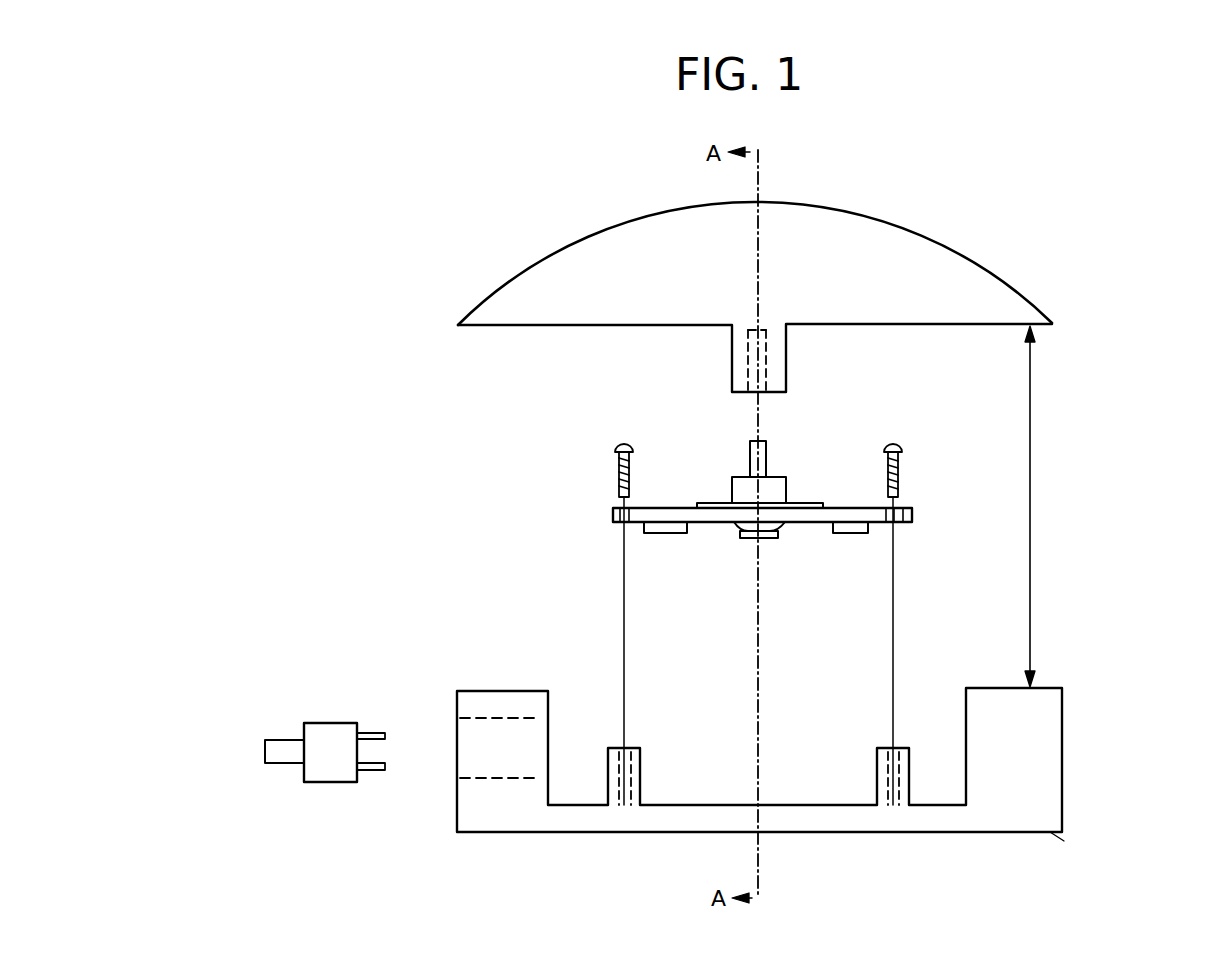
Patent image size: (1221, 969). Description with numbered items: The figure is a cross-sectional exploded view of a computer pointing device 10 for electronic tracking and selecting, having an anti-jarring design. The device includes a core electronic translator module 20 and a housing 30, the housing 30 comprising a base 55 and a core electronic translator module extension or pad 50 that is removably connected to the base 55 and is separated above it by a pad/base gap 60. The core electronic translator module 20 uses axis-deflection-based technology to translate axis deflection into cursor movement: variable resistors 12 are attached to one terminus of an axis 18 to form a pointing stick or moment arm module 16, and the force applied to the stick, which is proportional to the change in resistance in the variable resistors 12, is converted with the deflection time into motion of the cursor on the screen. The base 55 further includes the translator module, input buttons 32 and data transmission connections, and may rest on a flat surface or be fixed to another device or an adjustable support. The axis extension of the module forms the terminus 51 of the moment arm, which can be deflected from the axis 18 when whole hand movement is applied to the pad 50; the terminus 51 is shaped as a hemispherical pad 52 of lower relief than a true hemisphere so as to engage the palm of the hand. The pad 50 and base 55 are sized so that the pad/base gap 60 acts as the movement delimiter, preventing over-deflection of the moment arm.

The computer pointing device 10 is at (1138, 201).
The variable resistors 12 is at (653, 534).
The pointing stick or moment arm module 16 is at (773, 487).
The axis 18 is at (760, 452).
The core electronic translator module 20 is at (717, 503).
The housing 30 is at (530, 305).
The input button 32 is at (304, 780).
The core electronic translator module extension or pad 50 is at (908, 250).
The terminus 51 is at (804, 284).
The hemispherical pad 52 is at (688, 237).
The base 55 is at (1028, 778).
The pad/base gap 60 is at (1042, 410).